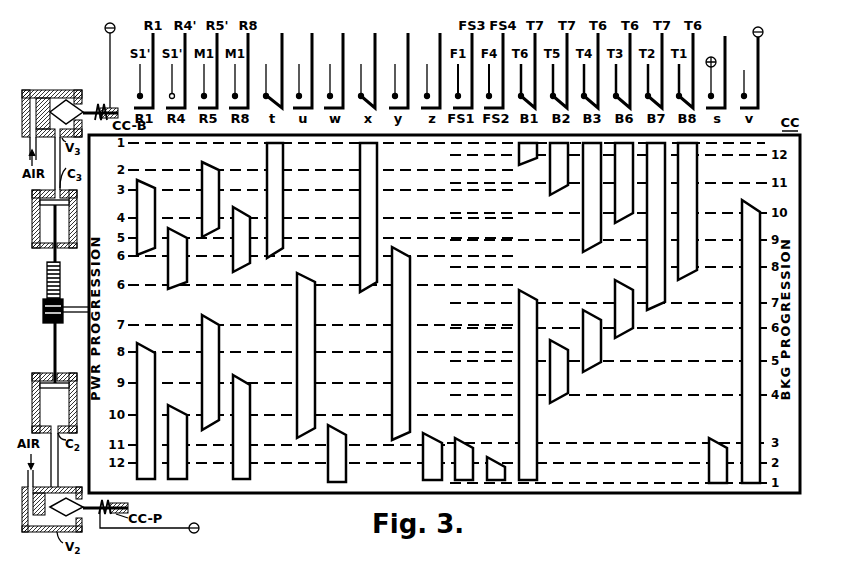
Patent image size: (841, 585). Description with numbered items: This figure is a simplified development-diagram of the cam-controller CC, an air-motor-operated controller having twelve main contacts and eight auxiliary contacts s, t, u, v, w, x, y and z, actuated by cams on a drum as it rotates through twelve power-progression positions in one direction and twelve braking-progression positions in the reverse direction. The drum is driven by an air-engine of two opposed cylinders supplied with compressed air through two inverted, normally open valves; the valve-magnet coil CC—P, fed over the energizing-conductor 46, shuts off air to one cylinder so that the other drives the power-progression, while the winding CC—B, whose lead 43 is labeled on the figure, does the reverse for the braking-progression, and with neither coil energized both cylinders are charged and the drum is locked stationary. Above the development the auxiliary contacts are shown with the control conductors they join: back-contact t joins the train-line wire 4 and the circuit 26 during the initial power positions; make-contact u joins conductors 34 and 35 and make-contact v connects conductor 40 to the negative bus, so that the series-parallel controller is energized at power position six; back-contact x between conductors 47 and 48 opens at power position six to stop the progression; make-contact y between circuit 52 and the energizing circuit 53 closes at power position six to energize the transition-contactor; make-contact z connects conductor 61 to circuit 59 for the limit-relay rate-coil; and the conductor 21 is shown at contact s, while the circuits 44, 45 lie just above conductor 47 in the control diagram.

The solenoid coil of brake valve CC-B 43 is at (94, 108).
The energizing-conductor 46 is at (120, 503).
The circuit 26 is at (279, 63).
The train-line wire 4 is at (264, 73).
The conductor 35 is at (307, 63).
The conductor 34 is at (298, 73).
The circuit 45 is at (338, 63).
The circuit 44 is at (329, 73).
The conductor 48 is at (372, 63).
The conductor 47 is at (361, 73).
The energizing circuit 53 is at (403, 63).
The circuit 52 is at (394, 73).
The circuit 59 is at (435, 63).
The conductor 61 is at (425, 73).
The power supply conductor 21 is at (720, 63).
The conductor 40 is at (743, 76).